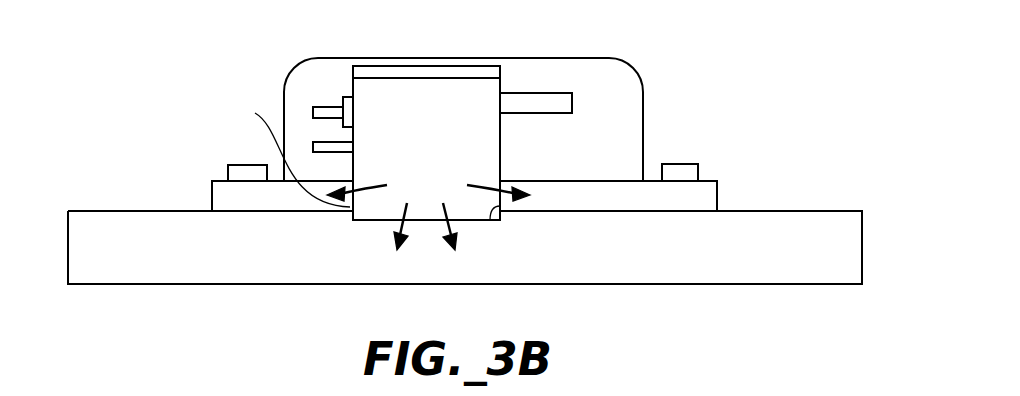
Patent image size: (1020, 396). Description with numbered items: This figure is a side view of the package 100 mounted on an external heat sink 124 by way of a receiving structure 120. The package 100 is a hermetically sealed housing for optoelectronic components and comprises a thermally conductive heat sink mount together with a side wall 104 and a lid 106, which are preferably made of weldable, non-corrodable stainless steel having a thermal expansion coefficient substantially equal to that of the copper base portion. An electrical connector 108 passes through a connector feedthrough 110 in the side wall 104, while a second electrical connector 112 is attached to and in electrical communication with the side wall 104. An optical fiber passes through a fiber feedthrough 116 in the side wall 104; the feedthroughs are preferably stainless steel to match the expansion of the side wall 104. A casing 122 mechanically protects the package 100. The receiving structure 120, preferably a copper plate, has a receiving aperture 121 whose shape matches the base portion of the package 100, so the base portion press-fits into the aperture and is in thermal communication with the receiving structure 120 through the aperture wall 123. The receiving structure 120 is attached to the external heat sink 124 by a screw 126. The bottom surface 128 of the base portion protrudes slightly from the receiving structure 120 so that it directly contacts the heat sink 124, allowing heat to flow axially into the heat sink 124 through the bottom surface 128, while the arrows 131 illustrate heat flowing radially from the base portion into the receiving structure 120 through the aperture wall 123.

The package 100 is at (368, 66).
The side wall 104 is at (490, 90).
The lid 106 is at (447, 78).
The electrical connector 108 is at (327, 107).
The connector feedthrough 110 is at (347, 97).
The electrical connector 112 is at (340, 153).
The fiber feedthrough 116 is at (535, 92).
The receiving structure 120 is at (708, 197).
The receiving aperture 121 is at (497, 220).
The casing 122 is at (645, 120).
The aperture wall 123 is at (281, 155).
The external heat sink 124 is at (795, 218).
The screw 126 is at (248, 168).
The bottom surface 128 is at (425, 222).
The arrows 131 is at (523, 303).